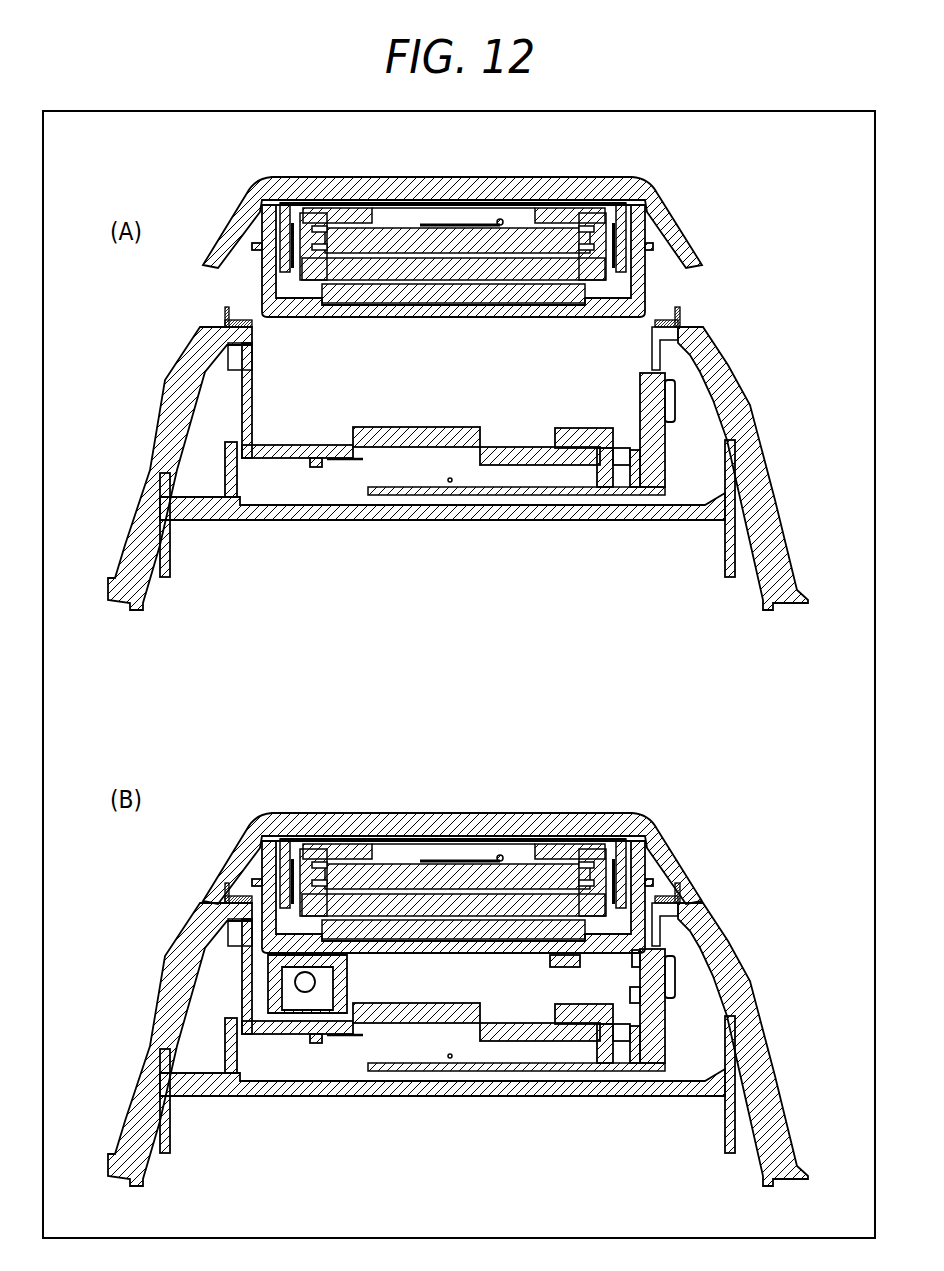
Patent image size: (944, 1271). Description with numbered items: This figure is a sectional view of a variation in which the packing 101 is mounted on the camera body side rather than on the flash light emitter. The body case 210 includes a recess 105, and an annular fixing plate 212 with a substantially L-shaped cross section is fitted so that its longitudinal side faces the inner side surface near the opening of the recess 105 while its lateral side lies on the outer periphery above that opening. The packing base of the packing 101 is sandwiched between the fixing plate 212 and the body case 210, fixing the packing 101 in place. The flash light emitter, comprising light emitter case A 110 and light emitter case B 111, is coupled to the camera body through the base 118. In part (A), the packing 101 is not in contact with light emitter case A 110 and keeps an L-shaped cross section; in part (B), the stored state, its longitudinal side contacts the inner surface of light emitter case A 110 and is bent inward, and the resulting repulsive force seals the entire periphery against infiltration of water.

The light emitter case A 110 is at (357, 176).
The light emitter case B 111 is at (295, 320).
The packing 101 is at (682, 308).
The fixing plate 212 is at (653, 327).
The base 118 is at (280, 452).
The recess 105 is at (625, 500).
The body case 210 is at (782, 523).